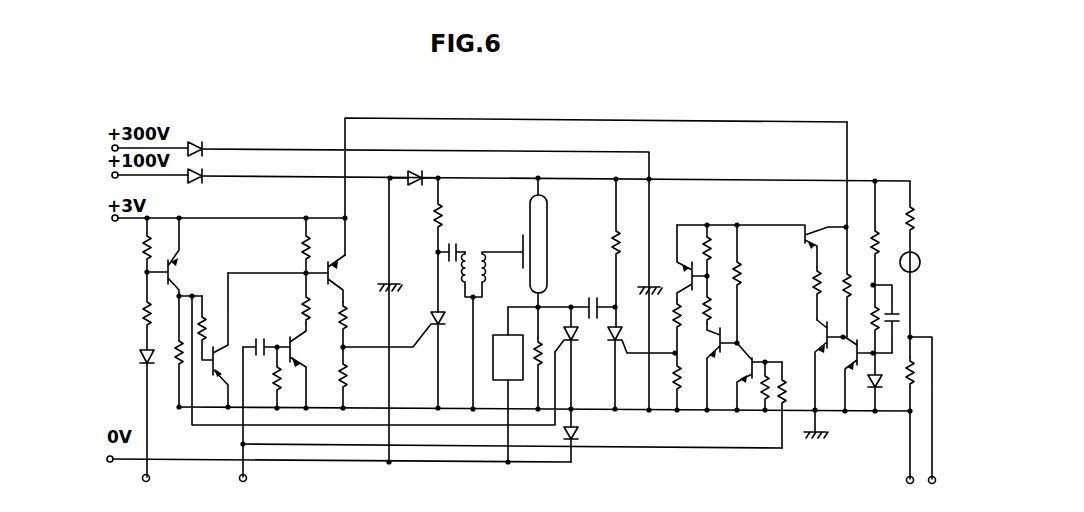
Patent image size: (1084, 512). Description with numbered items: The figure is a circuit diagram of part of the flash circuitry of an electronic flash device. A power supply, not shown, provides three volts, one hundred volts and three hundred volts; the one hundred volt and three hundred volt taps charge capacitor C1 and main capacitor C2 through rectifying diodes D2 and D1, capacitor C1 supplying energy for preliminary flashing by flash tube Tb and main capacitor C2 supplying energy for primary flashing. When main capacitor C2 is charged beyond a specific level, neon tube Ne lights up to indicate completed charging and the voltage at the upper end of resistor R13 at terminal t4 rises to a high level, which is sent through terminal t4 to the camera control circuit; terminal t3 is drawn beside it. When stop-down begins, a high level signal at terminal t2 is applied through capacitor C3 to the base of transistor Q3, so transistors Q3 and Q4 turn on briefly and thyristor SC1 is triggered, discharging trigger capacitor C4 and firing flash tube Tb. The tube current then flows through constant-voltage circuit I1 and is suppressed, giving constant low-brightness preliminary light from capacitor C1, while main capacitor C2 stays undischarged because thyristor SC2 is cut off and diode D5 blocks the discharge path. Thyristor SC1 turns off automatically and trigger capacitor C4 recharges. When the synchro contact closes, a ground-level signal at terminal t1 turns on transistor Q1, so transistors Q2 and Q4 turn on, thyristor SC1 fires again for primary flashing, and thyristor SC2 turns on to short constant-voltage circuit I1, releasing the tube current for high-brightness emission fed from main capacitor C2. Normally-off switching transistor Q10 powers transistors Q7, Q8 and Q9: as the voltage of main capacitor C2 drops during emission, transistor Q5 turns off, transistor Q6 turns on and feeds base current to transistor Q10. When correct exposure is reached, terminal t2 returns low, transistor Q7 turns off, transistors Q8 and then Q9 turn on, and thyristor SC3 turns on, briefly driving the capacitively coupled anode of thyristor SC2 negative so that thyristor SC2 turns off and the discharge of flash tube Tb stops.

The rectifying diode D1 is at (202, 143).
The rectifying diode D2 is at (202, 171).
The diode D5 is at (578, 430).
The transistor Q1 is at (176, 276).
The transistor Q2 is at (224, 380).
The transistor Q3 is at (310, 352).
The transistor Q4 is at (336, 271).
The transistor Q5 is at (850, 360).
The transistor Q6 is at (818, 331).
The transistor Q7 is at (748, 358).
The transistor Q8 is at (712, 357).
The transistor Q9 is at (692, 293).
The switching transistor Q10 is at (809, 229).
The capacitor C1 is at (392, 281).
The main capacitor C2 is at (645, 287).
The capacitor C3 is at (272, 331).
The trigger capacitor C4 is at (457, 246).
The thyristor SC1 is at (432, 309).
The thyristor SC2 is at (563, 333).
The thyristor SC3 is at (617, 342).
The flash tube Tb is at (548, 221).
The constant-voltage circuit I1 is at (508, 384).
The neon tube Ne is at (917, 271).
The resistor R13 is at (905, 364).
The terminal t1 is at (156, 487).
The terminal t2 is at (253, 487).
The terminal t3 is at (905, 495).
The terminal t4 is at (936, 495).